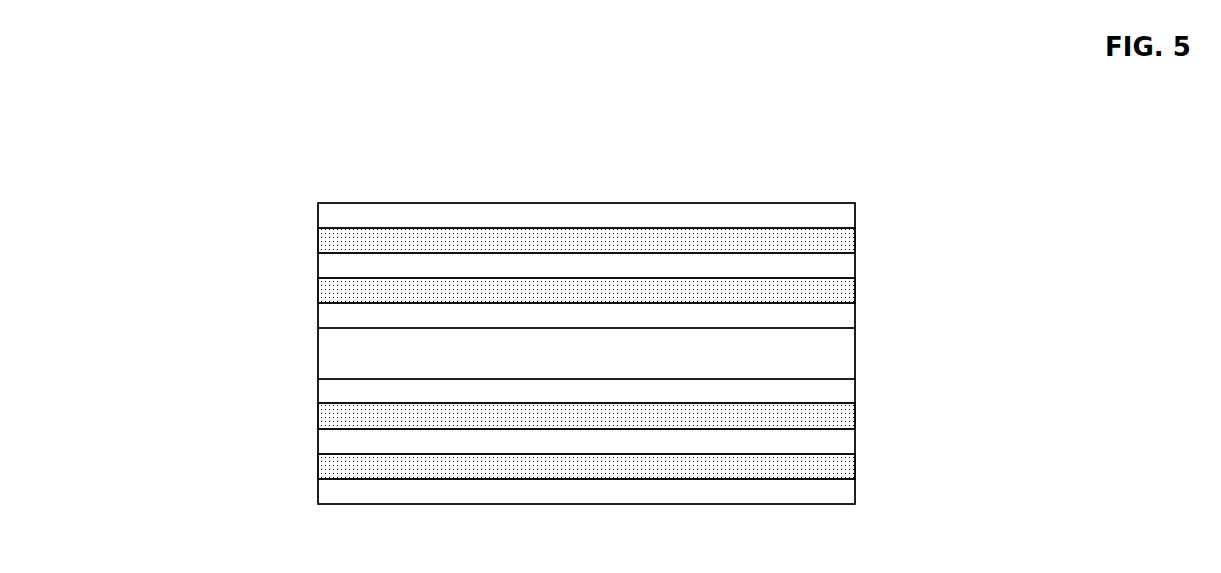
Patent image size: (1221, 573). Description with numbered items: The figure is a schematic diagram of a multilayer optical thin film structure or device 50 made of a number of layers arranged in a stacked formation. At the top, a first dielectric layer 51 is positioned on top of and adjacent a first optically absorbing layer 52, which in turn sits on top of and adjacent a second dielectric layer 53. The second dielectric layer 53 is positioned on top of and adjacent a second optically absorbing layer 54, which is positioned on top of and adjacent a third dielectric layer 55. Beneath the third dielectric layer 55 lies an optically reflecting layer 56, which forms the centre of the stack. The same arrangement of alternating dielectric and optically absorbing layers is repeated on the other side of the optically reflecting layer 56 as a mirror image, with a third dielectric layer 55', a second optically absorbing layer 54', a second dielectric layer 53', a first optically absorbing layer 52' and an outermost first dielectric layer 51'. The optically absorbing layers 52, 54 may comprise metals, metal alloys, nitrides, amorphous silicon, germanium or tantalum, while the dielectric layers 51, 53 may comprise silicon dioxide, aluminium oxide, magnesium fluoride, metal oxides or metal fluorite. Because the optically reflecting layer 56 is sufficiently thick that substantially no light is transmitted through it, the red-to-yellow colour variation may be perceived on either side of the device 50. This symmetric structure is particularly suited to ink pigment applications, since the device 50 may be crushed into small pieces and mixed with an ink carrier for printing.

The multilayer optical thin film structure 50 is at (160, 173).
The first dielectric layer 51 is at (644, 194).
The first optically absorbing layer 52 is at (670, 216).
The second dielectric layer 53 is at (648, 252).
The second optically absorbing layer 54 is at (646, 284).
The third dielectric layer 55 is at (645, 313).
The optically reflecting layer 56 is at (318, 353).
The third dielectric layer 55' is at (647, 372).
The second optically absorbing layer 54' is at (673, 392).
The second dielectric layer 53' is at (650, 428).
The first optically absorbing layer 52' is at (649, 460).
The first dielectric layer 51' is at (648, 490).